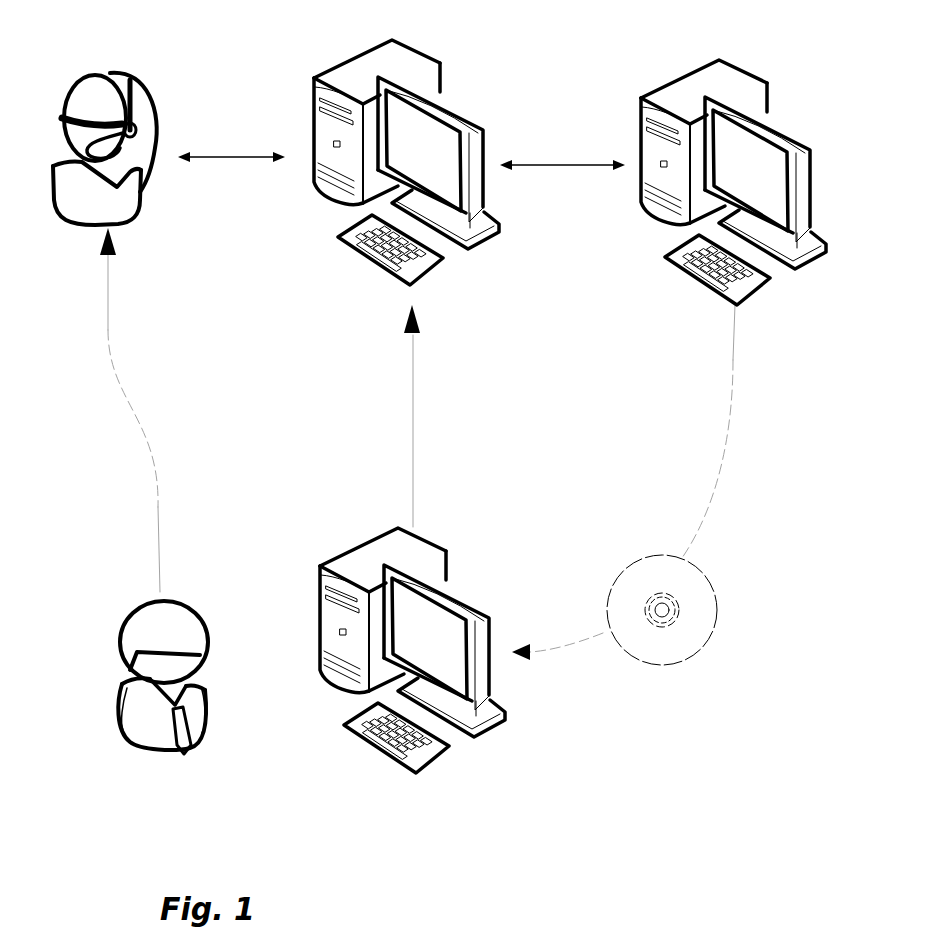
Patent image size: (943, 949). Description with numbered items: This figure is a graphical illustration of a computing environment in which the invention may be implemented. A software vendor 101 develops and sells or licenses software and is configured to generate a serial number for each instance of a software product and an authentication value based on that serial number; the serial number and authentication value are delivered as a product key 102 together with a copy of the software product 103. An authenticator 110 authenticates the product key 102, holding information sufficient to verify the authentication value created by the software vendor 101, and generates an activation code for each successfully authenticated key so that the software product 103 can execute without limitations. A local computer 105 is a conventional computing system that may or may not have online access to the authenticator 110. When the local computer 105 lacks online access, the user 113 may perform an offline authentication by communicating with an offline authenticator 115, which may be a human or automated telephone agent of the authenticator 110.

The authenticator 110 is at (445, 92).
The software vendor 101 is at (640, 98).
The local computer 105 is at (340, 553).
The offline authenticator 115 is at (158, 128).
The user 113 is at (203, 627).
The software product 103 is at (612, 580).
The product key 102 is at (685, 733).